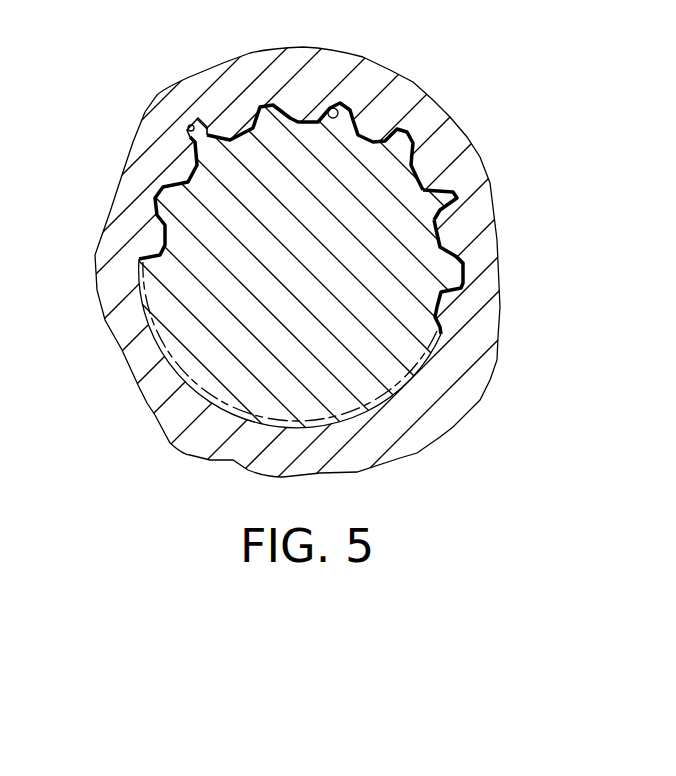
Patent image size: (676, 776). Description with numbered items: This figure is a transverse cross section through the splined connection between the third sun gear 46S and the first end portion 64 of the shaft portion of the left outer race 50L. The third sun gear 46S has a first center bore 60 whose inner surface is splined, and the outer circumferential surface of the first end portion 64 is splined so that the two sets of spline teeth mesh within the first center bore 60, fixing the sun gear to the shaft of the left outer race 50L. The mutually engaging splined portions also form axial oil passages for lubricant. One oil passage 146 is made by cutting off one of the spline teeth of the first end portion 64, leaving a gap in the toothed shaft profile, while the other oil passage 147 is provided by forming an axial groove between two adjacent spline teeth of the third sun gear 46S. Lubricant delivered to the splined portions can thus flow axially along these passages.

The third sun gear 46S is at (120, 206).
The first end portion 64 is at (392, 168).
The left outer race 50L is at (338, 229).
The first center bore 60 is at (327, 107).
The oil passage 146 is at (445, 210).
The oil passage 147 is at (186, 134).